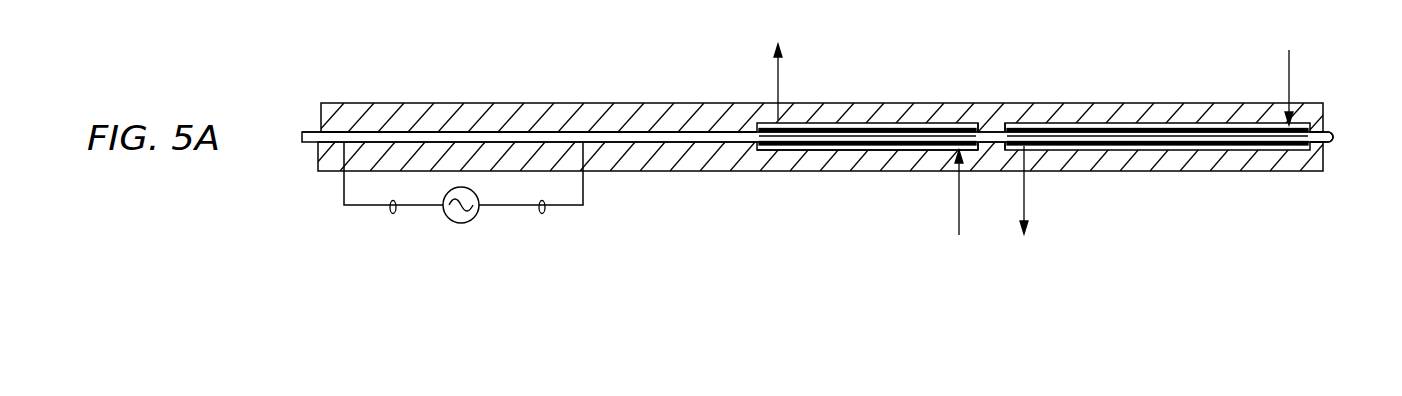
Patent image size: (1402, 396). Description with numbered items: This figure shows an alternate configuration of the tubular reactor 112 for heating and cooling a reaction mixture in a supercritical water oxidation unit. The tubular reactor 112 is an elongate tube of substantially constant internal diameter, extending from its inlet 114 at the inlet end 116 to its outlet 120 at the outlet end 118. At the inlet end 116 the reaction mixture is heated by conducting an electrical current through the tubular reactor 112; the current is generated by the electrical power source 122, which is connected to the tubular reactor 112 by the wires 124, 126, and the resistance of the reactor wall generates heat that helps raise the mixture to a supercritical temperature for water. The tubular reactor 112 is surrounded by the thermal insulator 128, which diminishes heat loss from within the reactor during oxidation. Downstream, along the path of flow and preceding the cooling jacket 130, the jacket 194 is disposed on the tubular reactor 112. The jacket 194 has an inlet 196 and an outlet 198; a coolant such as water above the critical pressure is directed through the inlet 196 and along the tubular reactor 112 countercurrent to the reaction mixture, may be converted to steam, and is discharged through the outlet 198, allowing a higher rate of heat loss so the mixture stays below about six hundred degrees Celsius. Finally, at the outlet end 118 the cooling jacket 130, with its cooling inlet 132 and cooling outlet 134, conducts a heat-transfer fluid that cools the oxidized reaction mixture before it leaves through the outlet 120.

The tubular reactor 112 is at (533, 126).
The inlet 114 is at (300, 132).
The inlet end 116 is at (477, 132).
The outlet end 118 is at (995, 130).
The outlet 120 is at (1337, 137).
The electrical power source 122 is at (467, 223).
The wire 124 is at (393, 213).
The wire 126 is at (542, 213).
The thermal insulator 128 is at (697, 115).
The cooling jacket 130 is at (1152, 152).
The cooling inlet 132 is at (1292, 123).
The cooling outlet 134 is at (1030, 155).
The jacket 194 is at (836, 152).
The inlet 196 is at (957, 152).
The outlet 198 is at (780, 120).